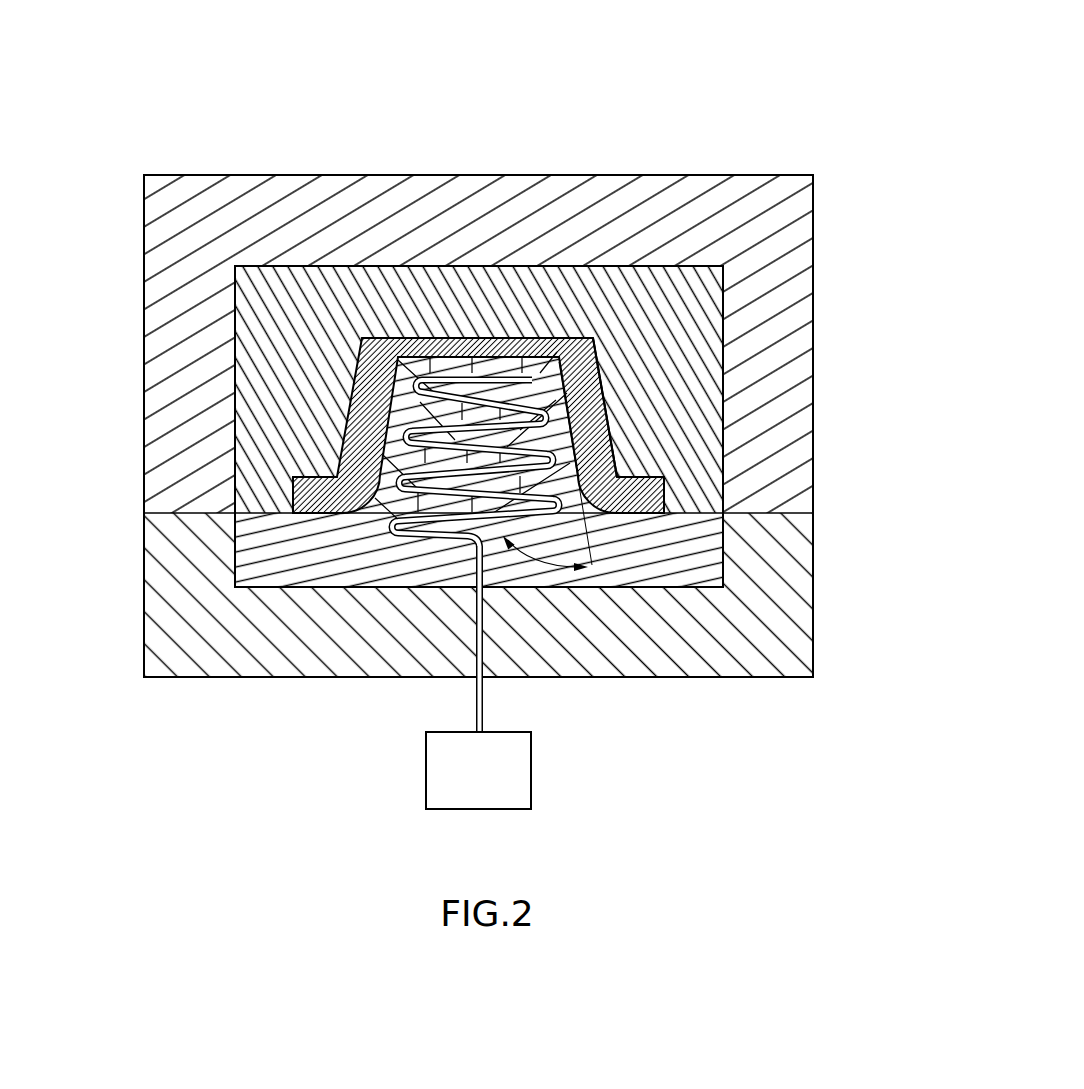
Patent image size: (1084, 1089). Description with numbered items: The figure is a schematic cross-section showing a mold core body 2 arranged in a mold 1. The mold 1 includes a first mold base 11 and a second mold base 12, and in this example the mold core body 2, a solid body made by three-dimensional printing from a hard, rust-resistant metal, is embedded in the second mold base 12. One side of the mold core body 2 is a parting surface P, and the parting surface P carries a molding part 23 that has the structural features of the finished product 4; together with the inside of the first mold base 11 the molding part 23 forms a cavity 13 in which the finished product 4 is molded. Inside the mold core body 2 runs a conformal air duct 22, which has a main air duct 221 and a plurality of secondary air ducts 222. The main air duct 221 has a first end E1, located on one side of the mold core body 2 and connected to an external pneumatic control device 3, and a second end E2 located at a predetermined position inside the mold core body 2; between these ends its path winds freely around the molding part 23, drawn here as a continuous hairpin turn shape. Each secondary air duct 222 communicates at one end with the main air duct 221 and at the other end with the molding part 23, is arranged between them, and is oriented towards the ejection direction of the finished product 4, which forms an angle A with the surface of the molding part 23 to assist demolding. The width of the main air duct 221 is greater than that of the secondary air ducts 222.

The mold 1 is at (274, 66).
The first mold base 11 is at (155, 340).
The second mold base 12 is at (157, 587).
The parting surface P is at (273, 513).
The mold core body 2 is at (270, 542).
The conformal air duct 22 is at (908, 325).
The main air duct 221 is at (598, 402).
The secondary air ducts 222 is at (613, 470).
The molding part 23 is at (600, 360).
The cavity 13 is at (378, 337).
The finished product 4 is at (319, 297).
The first end E1 is at (477, 587).
The second end E2 is at (590, 337).
The angle A is at (547, 466).
The external pneumatic control device 3 is at (531, 772).